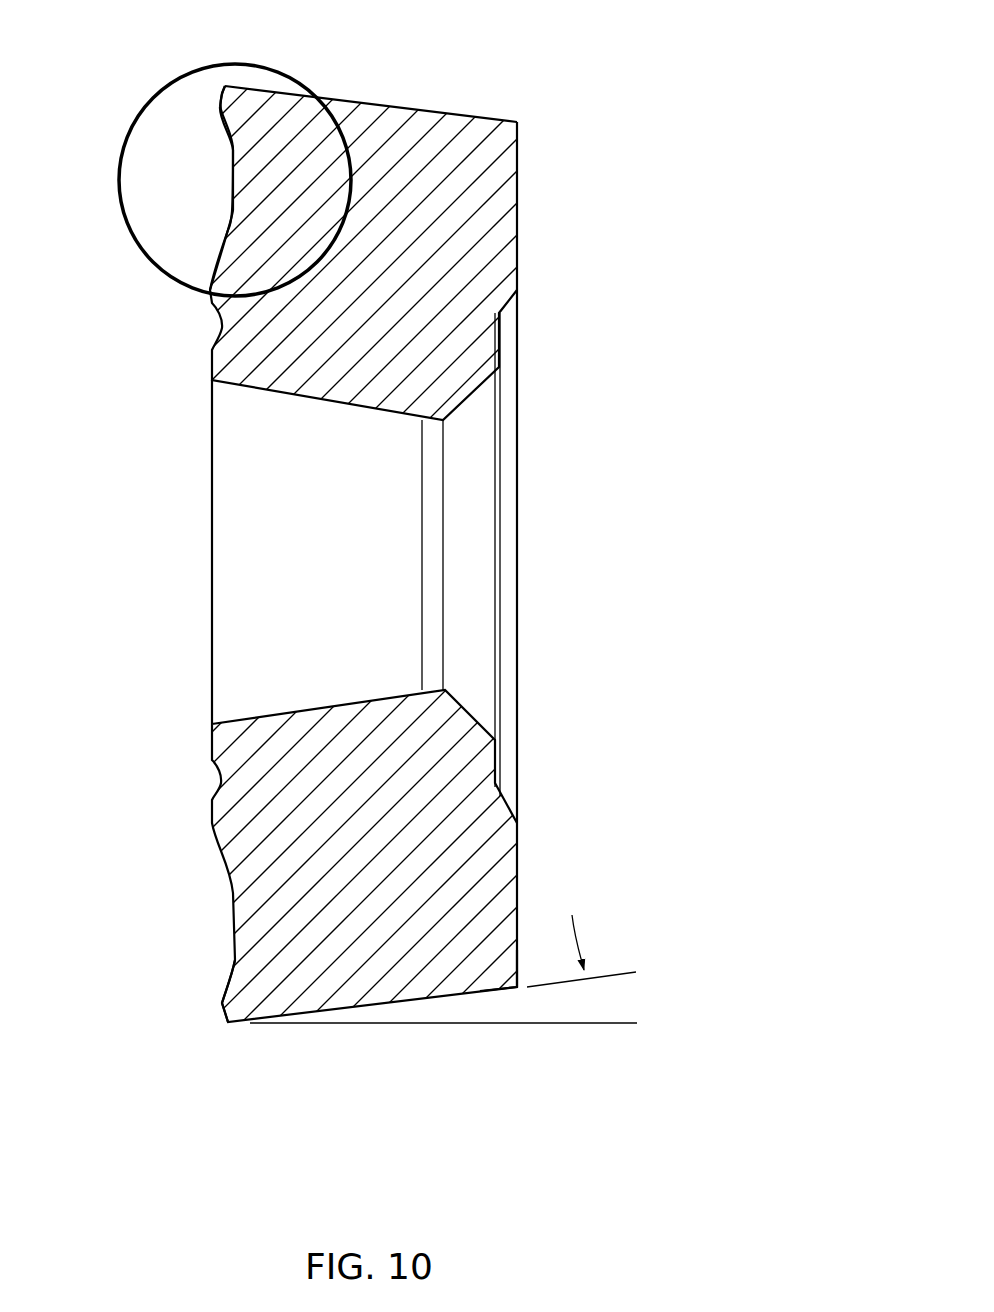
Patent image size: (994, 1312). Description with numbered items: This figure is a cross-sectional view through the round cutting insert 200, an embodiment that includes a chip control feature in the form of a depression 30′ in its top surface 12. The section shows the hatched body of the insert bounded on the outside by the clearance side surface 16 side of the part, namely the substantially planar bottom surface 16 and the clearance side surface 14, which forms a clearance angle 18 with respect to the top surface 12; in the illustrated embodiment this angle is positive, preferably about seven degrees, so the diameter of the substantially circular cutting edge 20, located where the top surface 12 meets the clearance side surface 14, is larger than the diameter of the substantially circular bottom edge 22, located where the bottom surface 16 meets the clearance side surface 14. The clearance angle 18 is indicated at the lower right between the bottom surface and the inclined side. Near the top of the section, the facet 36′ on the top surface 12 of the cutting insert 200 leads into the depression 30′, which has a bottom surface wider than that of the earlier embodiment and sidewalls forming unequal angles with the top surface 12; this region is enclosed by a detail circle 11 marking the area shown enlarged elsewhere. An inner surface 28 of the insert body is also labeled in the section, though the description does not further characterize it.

The round cutting insert 200 is at (652, 95).
The clearance side surface 14 is at (389, 94).
The top surface 12 is at (166, 843).
The bottom surface 16 is at (550, 230).
The inner bore surface 28 is at (285, 393).
The detail circle 11 is at (157, 92).
The facet 36′ is at (221, 92).
The depression 30′ is at (178, 173).
The cutting edge 20 is at (228, 1022).
The bottom edge 22 is at (517, 987).
The clearance angle 18 is at (583, 1027).